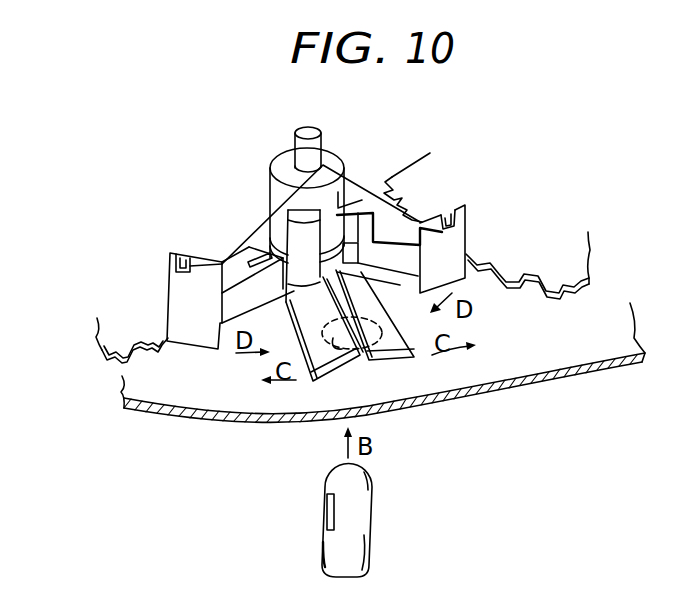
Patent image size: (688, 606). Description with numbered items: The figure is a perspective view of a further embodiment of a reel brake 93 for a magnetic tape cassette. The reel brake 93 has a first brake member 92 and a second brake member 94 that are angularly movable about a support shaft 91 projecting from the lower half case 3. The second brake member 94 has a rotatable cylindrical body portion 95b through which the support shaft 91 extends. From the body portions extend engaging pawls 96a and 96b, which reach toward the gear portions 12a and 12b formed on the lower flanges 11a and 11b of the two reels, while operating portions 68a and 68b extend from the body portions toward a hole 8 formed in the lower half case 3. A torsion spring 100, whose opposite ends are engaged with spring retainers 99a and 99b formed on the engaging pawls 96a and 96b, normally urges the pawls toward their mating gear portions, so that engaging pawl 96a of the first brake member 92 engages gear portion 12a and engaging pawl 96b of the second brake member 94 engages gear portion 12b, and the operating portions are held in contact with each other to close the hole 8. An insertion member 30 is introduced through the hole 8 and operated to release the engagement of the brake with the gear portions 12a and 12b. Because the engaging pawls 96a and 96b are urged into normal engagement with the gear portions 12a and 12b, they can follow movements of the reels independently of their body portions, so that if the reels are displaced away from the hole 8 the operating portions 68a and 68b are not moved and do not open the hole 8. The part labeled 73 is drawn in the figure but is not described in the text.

The lower half case 3 is at (575, 342).
The hole 8 is at (346, 384).
The lower flange 11a is at (112, 333).
The lower flange 11b is at (537, 249).
The gear portion 12a is at (165, 347).
The gear portion 12b is at (558, 285).
The insertion member 30 is at (358, 512).
The operating portion 68a is at (313, 383).
The operating portion 68b is at (398, 346).
The central bar 73 is at (308, 302).
The support shaft 91 is at (315, 135).
The first brake member 92 is at (377, 277).
The reel brake 93 is at (268, 148).
The second brake member 94 is at (276, 201).
The cylindrical body portion 95b is at (338, 170).
The engaging pawl 96a is at (180, 312).
The engaging pawl 96b is at (452, 248).
The spring retainer 99a is at (180, 258).
The spring retainer 99b is at (447, 205).
The torsion spring 100 is at (362, 186).